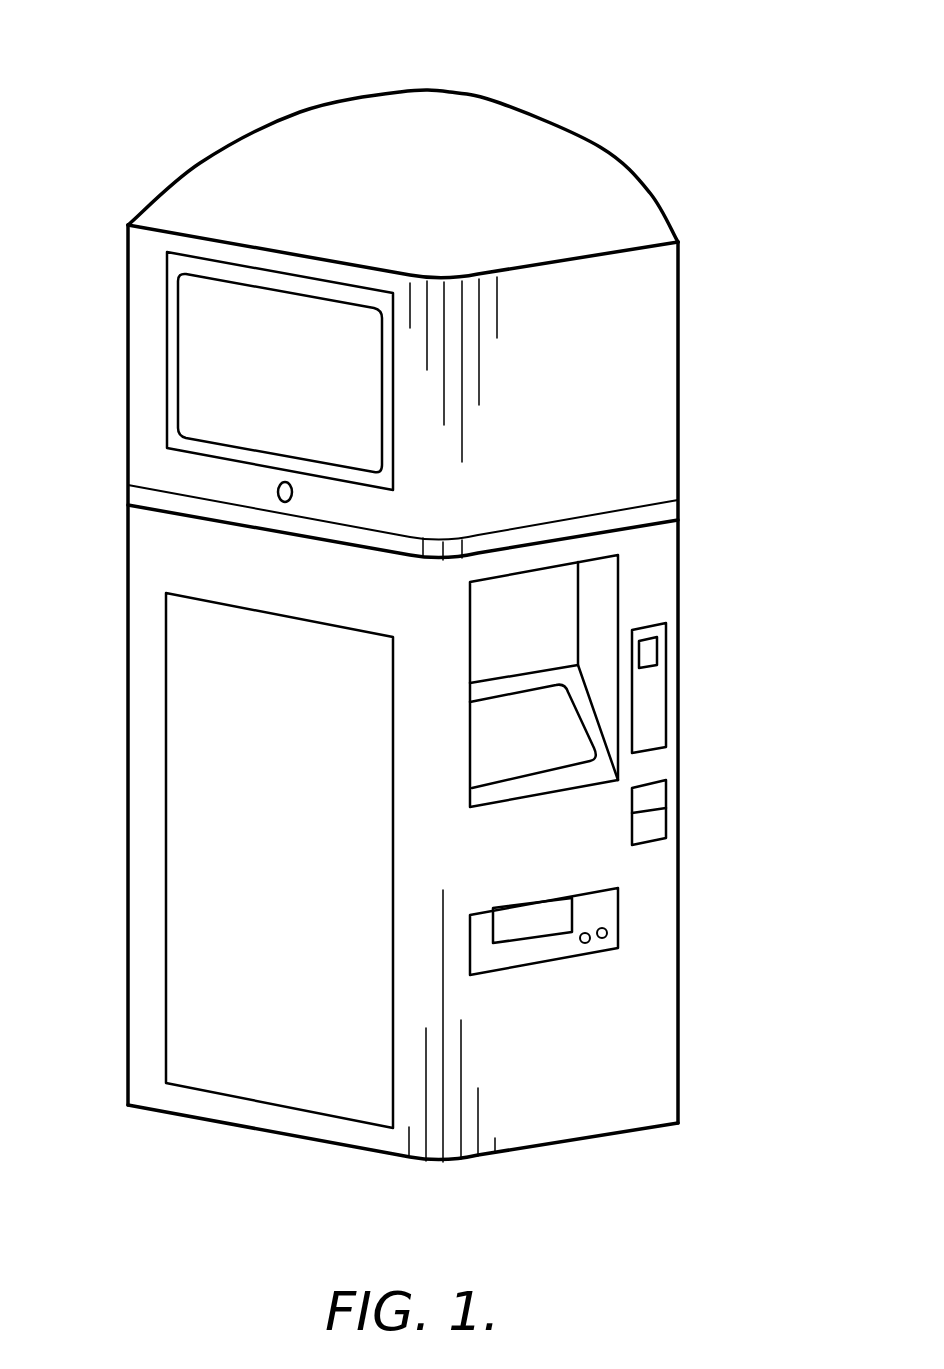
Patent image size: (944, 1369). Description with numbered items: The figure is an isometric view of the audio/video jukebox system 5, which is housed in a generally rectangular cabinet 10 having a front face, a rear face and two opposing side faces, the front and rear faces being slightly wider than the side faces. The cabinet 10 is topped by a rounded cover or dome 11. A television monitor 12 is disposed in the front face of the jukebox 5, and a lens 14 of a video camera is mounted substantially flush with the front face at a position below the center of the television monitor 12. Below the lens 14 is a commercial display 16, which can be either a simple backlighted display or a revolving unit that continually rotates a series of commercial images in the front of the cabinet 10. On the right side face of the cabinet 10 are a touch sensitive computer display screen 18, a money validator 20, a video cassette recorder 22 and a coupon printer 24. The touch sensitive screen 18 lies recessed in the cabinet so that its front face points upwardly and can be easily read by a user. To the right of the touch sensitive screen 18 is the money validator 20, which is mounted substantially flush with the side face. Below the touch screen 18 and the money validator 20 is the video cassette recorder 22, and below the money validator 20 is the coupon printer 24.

The audio/video jukebox system 5 is at (787, 90).
The cabinet 10 is at (128, 333).
The dome 11 is at (590, 142).
The television monitor 12 is at (260, 377).
The lens 14 is at (277, 490).
The commercial display 16 is at (268, 1082).
The touch sensitive computer display screen 18 is at (538, 738).
The money validator 20 is at (667, 653).
The video cassette recorder 22 is at (603, 913).
The coupon printer 24 is at (667, 827).